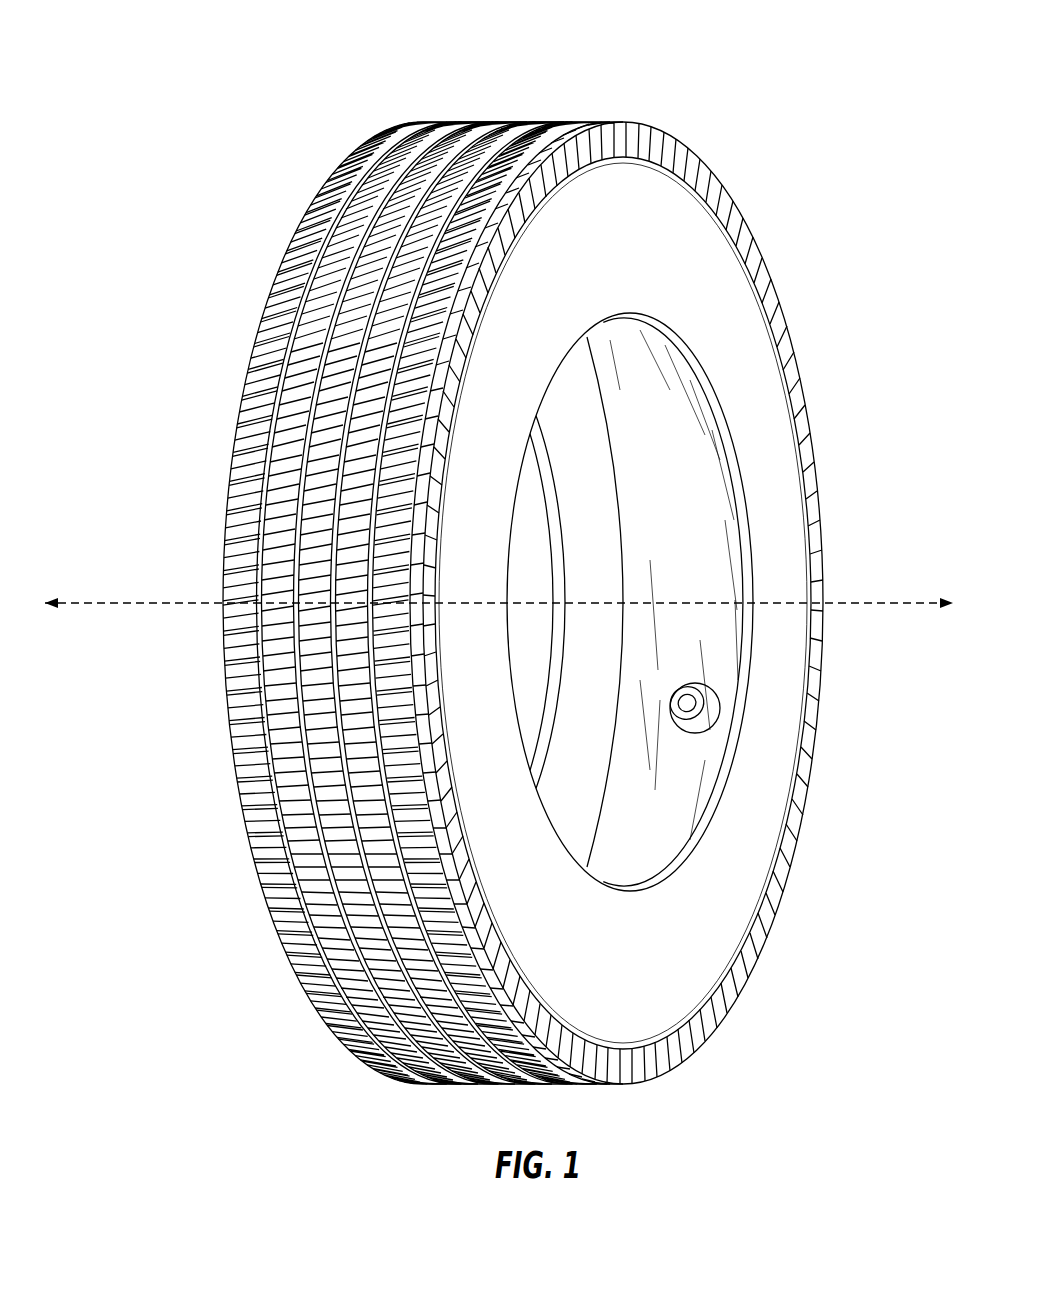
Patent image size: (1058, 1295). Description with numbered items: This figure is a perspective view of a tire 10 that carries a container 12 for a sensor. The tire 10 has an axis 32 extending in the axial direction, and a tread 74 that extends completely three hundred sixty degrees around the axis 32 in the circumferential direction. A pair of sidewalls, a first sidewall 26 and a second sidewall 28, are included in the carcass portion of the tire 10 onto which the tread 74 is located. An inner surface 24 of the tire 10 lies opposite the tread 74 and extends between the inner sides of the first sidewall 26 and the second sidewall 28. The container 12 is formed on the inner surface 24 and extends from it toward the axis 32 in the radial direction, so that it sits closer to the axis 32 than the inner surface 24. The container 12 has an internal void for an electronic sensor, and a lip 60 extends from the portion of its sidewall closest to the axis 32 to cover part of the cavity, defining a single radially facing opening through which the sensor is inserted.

The tire 10 is at (290, 54).
The container 12 is at (693, 731).
The inner surface 24 is at (725, 680).
The first sidewall 26 is at (590, 441).
The second sidewall 28 is at (752, 311).
The axis 32 is at (882, 603).
The lip 60 is at (686, 691).
The tread 74 is at (240, 817).